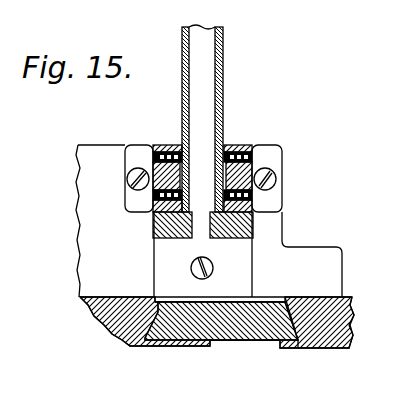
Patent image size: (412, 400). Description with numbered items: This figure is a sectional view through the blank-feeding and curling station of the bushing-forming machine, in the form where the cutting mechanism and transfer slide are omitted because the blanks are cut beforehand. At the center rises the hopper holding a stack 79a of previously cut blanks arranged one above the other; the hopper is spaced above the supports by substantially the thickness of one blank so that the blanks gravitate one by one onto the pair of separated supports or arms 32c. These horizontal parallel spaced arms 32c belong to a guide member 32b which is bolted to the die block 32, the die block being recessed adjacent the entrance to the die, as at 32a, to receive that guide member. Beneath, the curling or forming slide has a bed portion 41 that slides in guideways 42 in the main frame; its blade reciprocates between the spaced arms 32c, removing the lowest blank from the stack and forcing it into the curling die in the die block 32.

The die block 32 is at (272, 153).
The recess 32a is at (160, 238).
The guide member 32b is at (186, 240).
The horizontal parallel spaced arms 32c is at (238, 240).
The bed portion 41 is at (262, 342).
The guideways 42 is at (303, 328).
The stack of previously cut blanks 79a is at (223, 94).